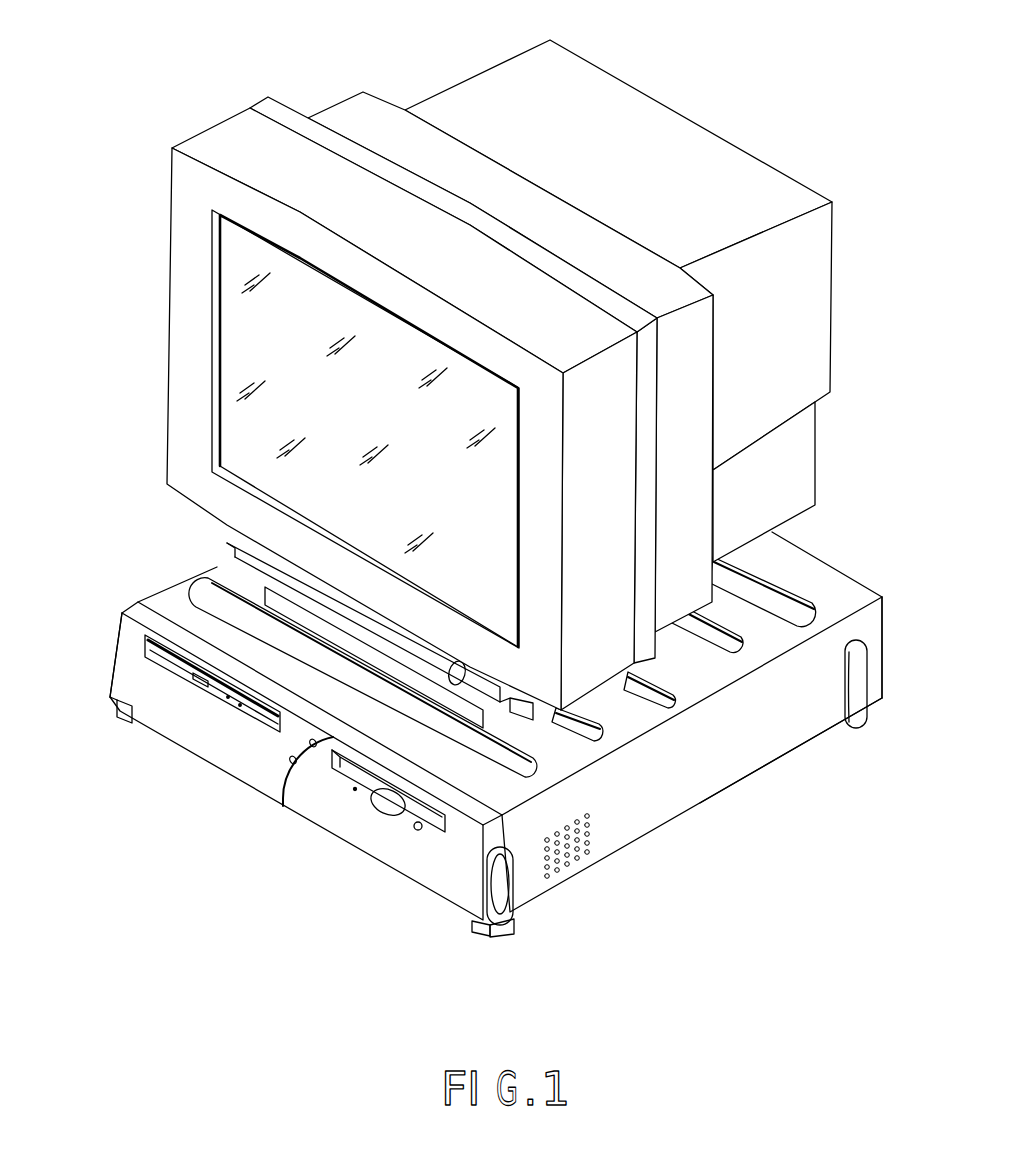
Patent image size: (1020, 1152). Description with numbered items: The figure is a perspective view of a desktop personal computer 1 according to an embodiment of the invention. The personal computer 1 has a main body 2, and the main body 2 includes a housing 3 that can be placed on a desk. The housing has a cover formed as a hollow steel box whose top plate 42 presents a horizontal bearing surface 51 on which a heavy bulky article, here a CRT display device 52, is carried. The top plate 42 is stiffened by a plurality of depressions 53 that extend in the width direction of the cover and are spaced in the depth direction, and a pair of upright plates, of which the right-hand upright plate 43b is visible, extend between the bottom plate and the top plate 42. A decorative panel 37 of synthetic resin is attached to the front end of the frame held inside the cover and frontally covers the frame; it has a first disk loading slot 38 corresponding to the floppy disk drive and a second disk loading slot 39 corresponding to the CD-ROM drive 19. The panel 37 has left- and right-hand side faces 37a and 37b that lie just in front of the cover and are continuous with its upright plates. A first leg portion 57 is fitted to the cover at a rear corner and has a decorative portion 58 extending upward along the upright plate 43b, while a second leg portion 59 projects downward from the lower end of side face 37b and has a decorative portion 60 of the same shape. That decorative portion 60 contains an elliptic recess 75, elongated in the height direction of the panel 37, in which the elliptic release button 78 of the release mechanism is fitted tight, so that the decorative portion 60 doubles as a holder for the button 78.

The desktop personal computer 1 is at (479, 367).
The main body 2 is at (499, 756).
The housing 3 is at (797, 745).
The CD-ROM drive 19 is at (242, 713).
The decorative panel 37 is at (255, 773).
The left-hand side face 37a is at (122, 612).
The right-hand side face 37b is at (490, 835).
The first disk loading slot 38 is at (370, 787).
The second disk loading slot 39 is at (157, 667).
The top plate 42 is at (215, 570).
The upright plate 43b is at (840, 647).
The bearing surface 51 is at (547, 750).
The CRT display device 52 is at (345, 120).
The depressions 53 is at (647, 697).
The first leg portion 57 is at (857, 727).
The decorative portion 58 is at (857, 682).
The second leg portion 59 is at (507, 923).
The decorative portion 60 is at (492, 933).
The recess 75 is at (483, 888).
The release button 78 is at (505, 885).